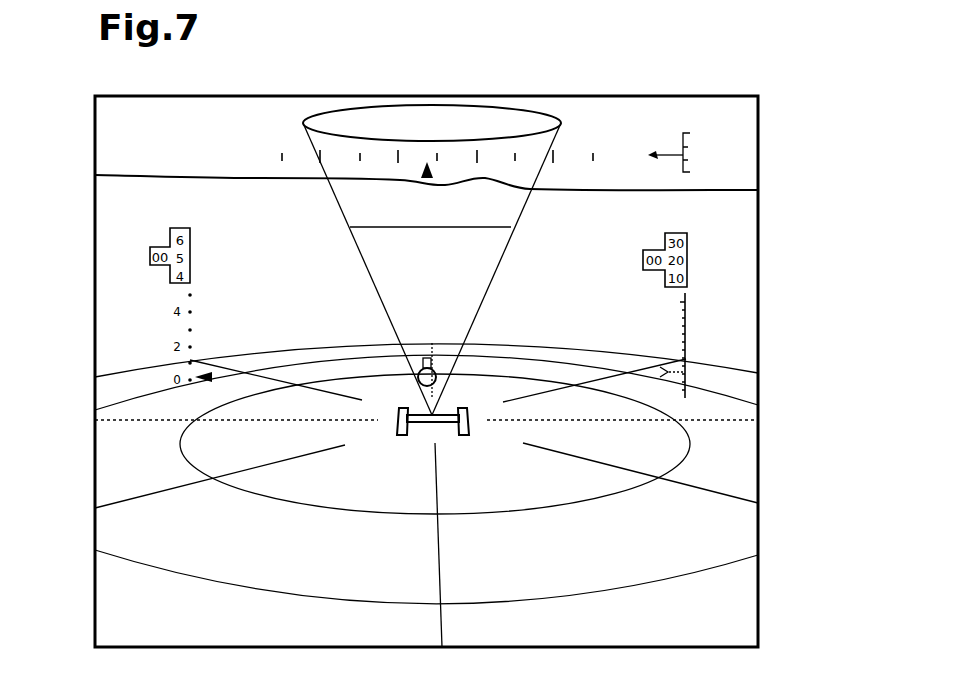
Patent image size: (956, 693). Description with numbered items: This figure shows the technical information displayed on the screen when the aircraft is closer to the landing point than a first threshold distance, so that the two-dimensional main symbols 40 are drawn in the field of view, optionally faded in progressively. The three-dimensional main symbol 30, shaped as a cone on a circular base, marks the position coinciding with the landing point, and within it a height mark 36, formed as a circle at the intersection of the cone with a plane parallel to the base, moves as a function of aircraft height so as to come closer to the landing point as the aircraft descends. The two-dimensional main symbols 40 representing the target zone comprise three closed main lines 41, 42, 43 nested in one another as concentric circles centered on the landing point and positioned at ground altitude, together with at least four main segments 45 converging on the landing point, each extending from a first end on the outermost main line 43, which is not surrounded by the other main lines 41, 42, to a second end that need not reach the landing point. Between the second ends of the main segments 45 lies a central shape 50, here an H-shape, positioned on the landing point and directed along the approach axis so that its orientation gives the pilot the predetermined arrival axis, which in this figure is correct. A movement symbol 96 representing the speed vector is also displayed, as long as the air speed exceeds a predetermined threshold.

The three-dimensional main symbol 30 is at (528, 80).
The height mark 36 is at (415, 228).
The two-dimensional main symbol 40 is at (745, 336).
The main line 41 is at (692, 445).
The main line 42 is at (722, 573).
The main line 43 is at (607, 352).
The main segment 45 is at (277, 380).
The central shape 50 is at (386, 444).
The movement symbol 96 is at (428, 366).